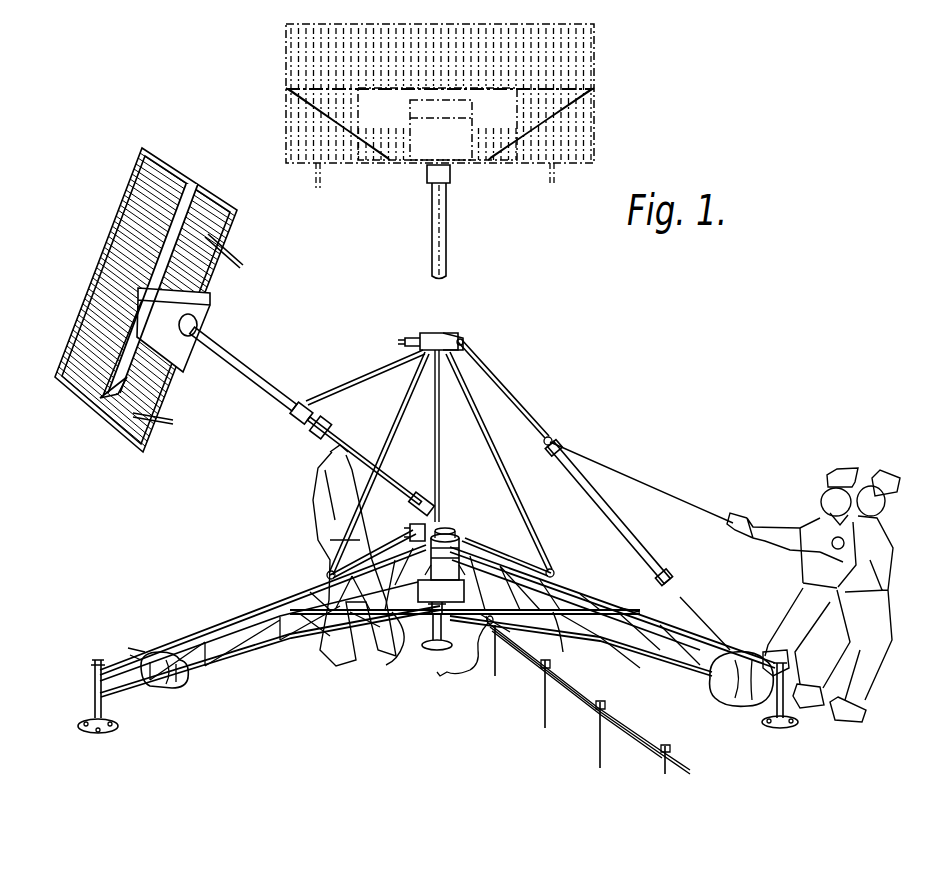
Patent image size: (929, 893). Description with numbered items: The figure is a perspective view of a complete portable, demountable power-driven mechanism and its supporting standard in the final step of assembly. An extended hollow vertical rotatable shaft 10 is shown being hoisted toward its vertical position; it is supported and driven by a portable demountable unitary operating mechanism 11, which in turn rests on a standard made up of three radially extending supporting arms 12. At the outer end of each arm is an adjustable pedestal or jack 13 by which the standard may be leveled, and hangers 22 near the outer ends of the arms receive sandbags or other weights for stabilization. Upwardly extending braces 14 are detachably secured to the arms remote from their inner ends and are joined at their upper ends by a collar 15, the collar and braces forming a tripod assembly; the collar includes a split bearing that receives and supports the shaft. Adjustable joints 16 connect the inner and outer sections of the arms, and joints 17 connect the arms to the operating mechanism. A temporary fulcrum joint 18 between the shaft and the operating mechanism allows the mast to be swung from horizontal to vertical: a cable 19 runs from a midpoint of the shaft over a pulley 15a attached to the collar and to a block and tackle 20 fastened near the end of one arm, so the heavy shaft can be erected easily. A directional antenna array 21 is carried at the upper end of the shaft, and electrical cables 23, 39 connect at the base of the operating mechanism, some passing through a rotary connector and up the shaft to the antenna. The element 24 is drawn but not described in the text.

The hollow vertical rotatable shaft 10 is at (235, 356).
The unitary driving or operating mechanism 11 is at (450, 541).
The supporting arms 12 is at (232, 630).
The adjustable pedestal or jack 13 is at (93, 700).
The braces 14 is at (437, 427).
The collar 15 is at (446, 334).
The pulley 15a is at (463, 337).
The joints 16 is at (327, 578).
The joints 17 is at (431, 606).
The fulcrum joint 18 is at (410, 531).
The cable 19 is at (358, 378).
The block and tackle 20 is at (582, 448).
The directional antenna array 21 is at (513, 165).
The hangers 22 is at (185, 675).
The cables 23 is at (573, 710).
The cable loop 24 is at (386, 666).
The cables 39 is at (520, 660).